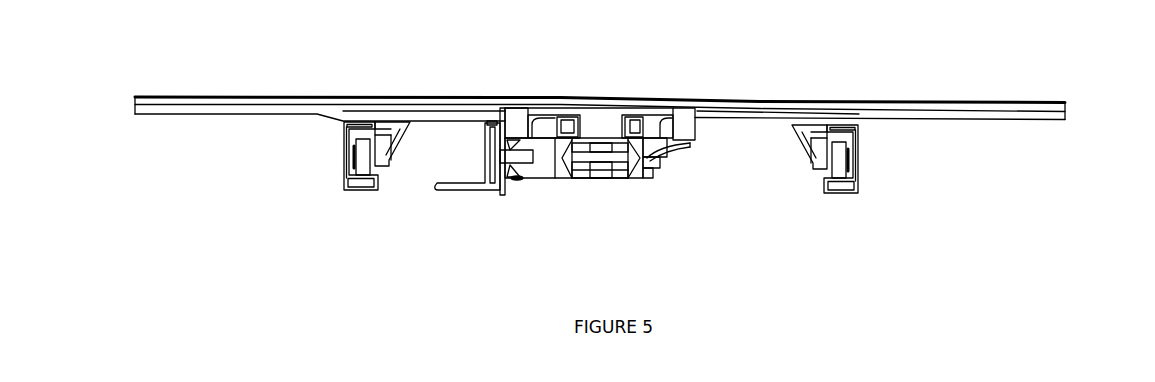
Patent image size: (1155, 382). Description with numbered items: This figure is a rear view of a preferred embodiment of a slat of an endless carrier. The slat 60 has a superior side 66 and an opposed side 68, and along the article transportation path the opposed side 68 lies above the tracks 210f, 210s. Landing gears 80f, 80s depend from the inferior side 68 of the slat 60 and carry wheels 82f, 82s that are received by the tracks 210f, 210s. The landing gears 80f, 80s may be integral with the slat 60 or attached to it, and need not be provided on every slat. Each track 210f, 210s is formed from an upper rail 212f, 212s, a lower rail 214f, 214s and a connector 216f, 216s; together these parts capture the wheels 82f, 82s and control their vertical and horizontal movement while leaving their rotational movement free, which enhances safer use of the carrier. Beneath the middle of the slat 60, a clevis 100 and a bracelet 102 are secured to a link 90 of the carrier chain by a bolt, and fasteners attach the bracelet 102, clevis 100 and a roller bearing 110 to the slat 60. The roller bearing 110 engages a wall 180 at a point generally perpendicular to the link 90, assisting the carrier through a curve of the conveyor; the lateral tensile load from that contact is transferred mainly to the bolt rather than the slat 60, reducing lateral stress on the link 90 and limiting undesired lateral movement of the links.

The slat 60 is at (1068, 104).
The superior side 66 is at (983, 102).
The opposed side 68 is at (1010, 121).
The landing gear 80f is at (388, 145).
The landing gear 80s is at (807, 148).
The wheel 82f is at (357, 138).
The wheel 82s is at (830, 135).
The link 90 is at (640, 178).
The clevis 100 is at (548, 180).
The bracelet 102 is at (695, 145).
The roller bearing 110 is at (503, 196).
The wall 180 is at (484, 190).
The track 210f is at (343, 170).
The track 210s is at (860, 160).
The upper rail 212f is at (363, 123).
The upper rail 212s is at (840, 125).
The lower rail 214f is at (348, 183).
The lower rail 214s is at (850, 190).
The connector 216f is at (343, 152).
The connector 216s is at (858, 180).